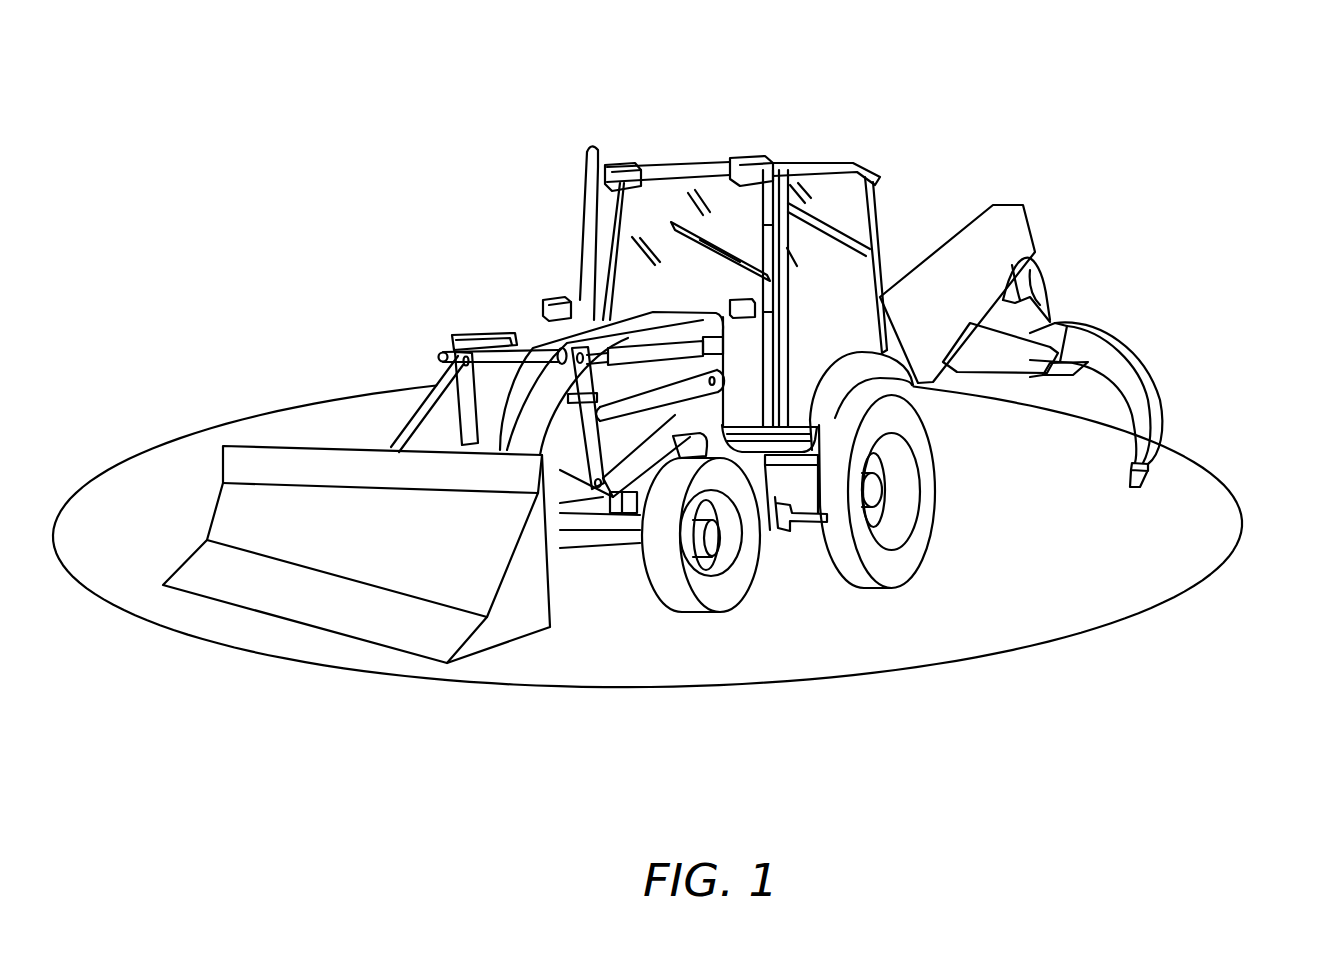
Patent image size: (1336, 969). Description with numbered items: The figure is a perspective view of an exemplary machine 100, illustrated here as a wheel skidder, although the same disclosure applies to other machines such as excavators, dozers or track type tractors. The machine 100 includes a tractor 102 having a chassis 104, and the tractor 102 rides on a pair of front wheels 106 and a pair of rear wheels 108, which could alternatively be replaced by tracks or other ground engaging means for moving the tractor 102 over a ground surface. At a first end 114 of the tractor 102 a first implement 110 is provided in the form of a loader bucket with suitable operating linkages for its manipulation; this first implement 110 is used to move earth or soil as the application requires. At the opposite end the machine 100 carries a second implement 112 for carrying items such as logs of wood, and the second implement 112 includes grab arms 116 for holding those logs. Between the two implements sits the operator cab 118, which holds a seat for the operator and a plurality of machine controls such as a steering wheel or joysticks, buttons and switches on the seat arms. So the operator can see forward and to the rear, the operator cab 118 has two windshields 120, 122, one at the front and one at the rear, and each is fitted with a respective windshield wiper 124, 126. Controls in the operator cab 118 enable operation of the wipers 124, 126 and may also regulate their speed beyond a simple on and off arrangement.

The machine 100 is at (1193, 93).
The tractor 102 is at (845, 642).
The chassis 104 is at (777, 497).
The front wheels 106 is at (683, 593).
The rear wheels 108 is at (903, 560).
The first implement 110 is at (308, 424).
The second implement 112 is at (1122, 266).
The first end 114 is at (247, 622).
The grab arms 116 is at (1195, 392).
The operator cab 118 is at (705, 150).
The windshield 120 is at (635, 207).
The windshield 122 is at (848, 200).
The windshield wiper 124 is at (682, 220).
The windshield wiper 126 is at (822, 190).